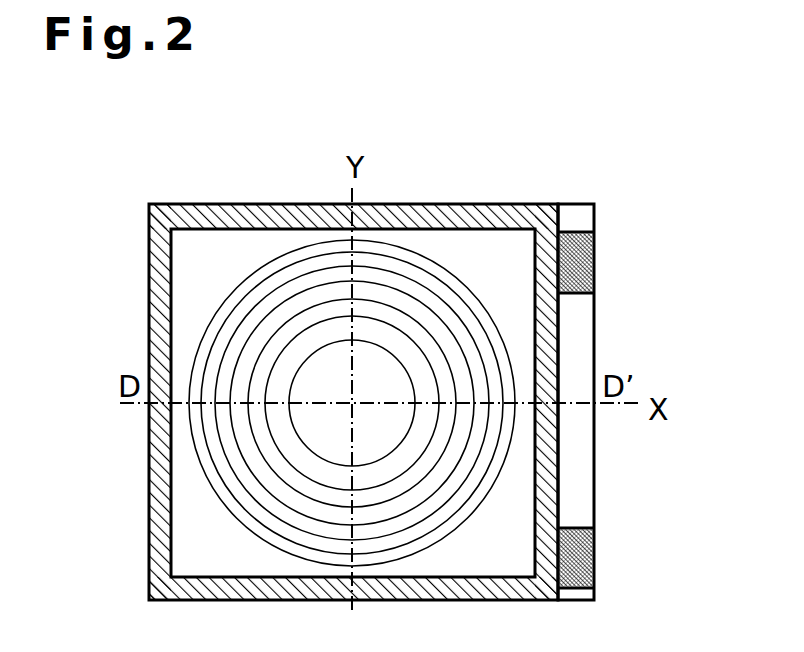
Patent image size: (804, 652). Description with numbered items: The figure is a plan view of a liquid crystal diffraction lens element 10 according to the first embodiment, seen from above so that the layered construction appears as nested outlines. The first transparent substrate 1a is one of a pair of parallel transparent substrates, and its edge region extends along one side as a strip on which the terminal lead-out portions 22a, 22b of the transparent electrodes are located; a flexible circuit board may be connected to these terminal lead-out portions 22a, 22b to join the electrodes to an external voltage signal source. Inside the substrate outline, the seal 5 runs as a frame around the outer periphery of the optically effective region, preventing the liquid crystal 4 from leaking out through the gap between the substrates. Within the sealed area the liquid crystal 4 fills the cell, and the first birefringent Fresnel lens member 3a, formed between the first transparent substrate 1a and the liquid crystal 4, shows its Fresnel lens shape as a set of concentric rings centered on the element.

The liquid crystal diffraction lens element 10 is at (389, 352).
The seal 5 is at (150, 490).
The liquid crystal 4 is at (304, 403).
The first birefringent Fresnel lens member 3a is at (265, 331).
The first transparent substrate 1a is at (580, 343).
The terminal lead-out portion 22a is at (578, 563).
The terminal lead-out portion 22b is at (578, 270).